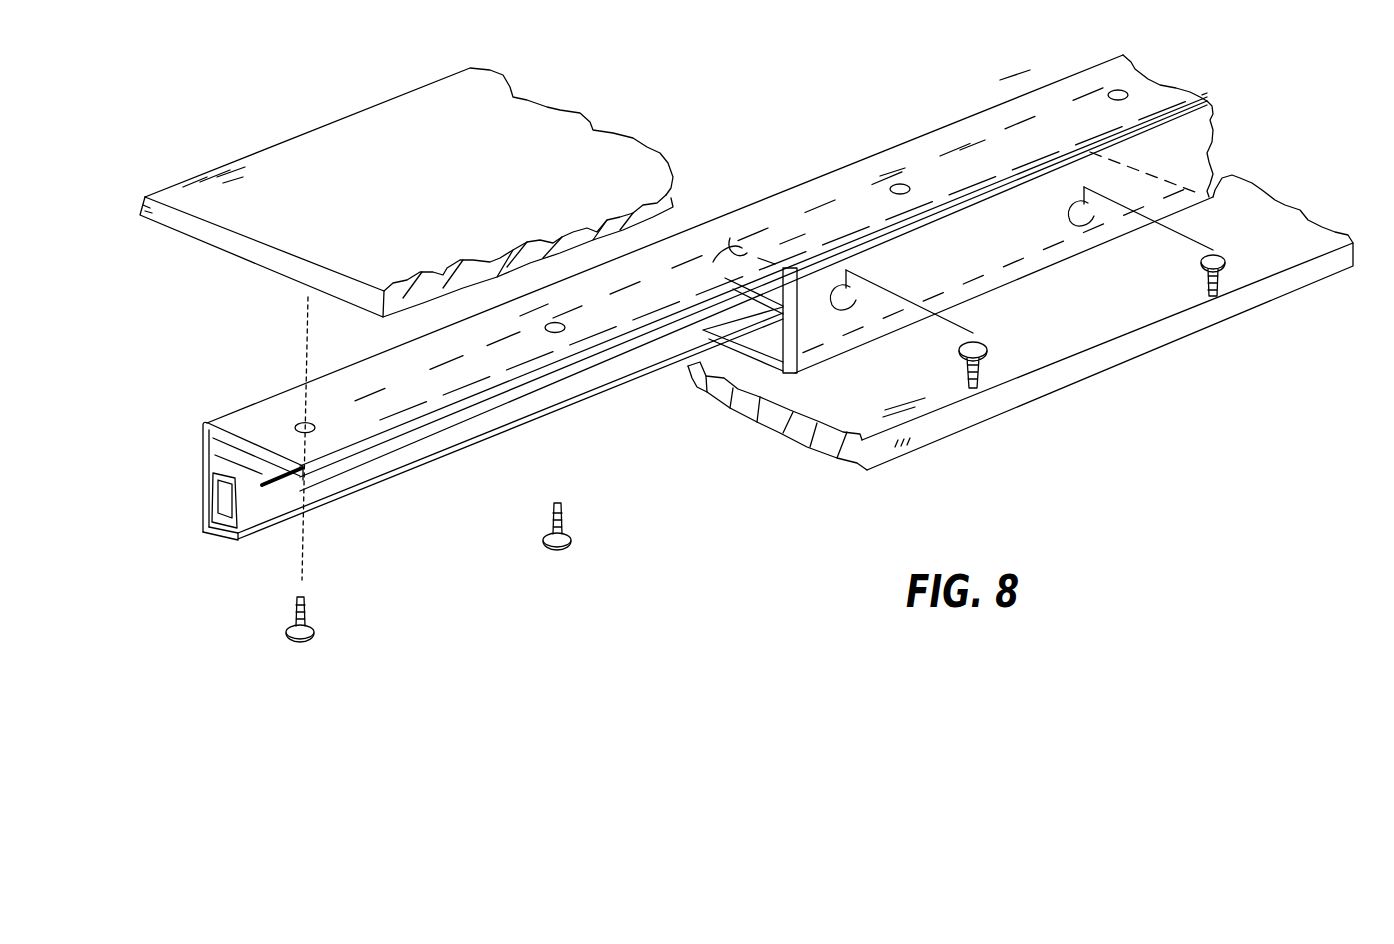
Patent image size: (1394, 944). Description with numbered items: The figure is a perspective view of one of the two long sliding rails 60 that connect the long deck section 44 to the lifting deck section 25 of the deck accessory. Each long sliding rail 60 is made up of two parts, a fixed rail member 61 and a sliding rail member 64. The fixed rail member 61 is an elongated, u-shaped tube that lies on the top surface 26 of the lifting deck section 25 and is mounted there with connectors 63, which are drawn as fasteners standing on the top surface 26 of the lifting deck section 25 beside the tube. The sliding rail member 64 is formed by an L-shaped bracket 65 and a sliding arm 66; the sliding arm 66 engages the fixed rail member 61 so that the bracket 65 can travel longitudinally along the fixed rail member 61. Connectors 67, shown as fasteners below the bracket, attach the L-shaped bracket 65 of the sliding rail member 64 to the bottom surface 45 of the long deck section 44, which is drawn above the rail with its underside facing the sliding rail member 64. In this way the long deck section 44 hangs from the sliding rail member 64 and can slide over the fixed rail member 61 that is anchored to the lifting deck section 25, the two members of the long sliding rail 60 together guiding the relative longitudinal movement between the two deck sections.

The lifting deck section 25 is at (812, 452).
The top surface 26 is at (1097, 300).
The long deck section 44 is at (272, 150).
The bottom surface 45 is at (222, 250).
The long sliding rail 60 is at (803, 163).
The fixed rail member 61 is at (1214, 153).
The connectors 63 is at (985, 372).
The sliding rail member 64 is at (204, 434).
The L-shaped bracket 65 is at (377, 439).
The sliding arm 66 is at (208, 530).
The connectors 67 is at (296, 613).